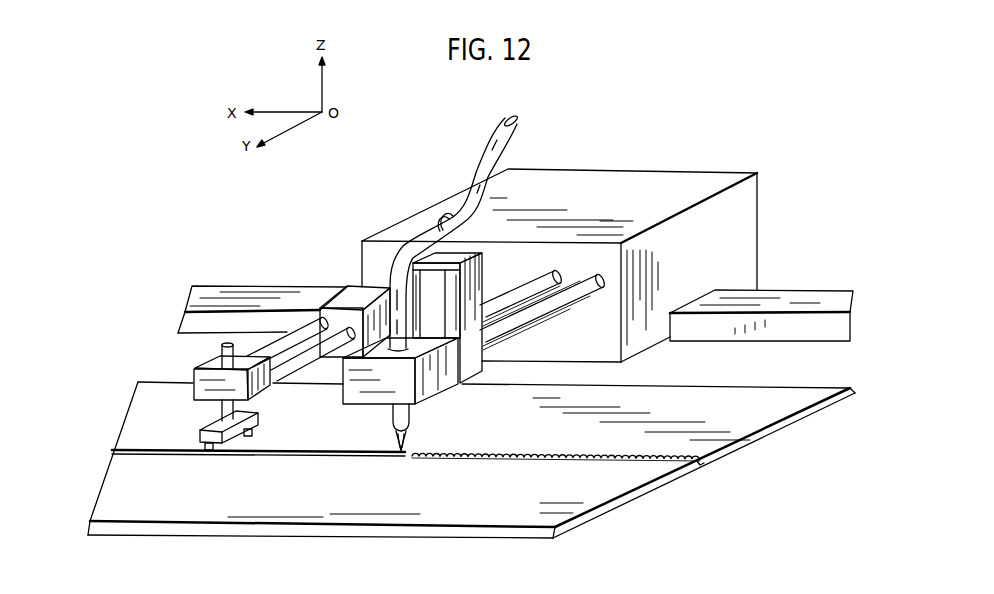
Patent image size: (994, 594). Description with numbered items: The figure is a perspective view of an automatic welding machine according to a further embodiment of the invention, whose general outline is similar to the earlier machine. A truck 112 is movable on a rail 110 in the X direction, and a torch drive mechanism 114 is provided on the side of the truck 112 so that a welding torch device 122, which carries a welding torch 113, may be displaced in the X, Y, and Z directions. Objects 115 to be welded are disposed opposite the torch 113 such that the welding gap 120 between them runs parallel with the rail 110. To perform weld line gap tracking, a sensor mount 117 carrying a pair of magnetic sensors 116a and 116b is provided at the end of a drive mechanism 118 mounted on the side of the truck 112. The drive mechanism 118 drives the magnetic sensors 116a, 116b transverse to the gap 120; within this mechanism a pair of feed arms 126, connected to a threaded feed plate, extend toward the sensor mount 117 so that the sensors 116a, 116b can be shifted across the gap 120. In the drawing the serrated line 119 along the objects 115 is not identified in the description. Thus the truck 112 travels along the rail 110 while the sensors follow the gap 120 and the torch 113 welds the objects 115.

The rail 110 is at (810, 295).
The truck 112 is at (682, 180).
The welding torch 113 is at (387, 432).
The torch drive mechanism 114 is at (536, 327).
The objects to be welded 115 is at (746, 425).
The magnetic sensor 116a is at (207, 448).
The magnetic sensor 116b is at (253, 436).
The sensor mount 117 is at (210, 426).
The drive mechanism 118 is at (347, 300).
The serrated edge 119 is at (580, 453).
The welding gap 120 is at (325, 458).
The welding torch device 122 is at (440, 382).
The feed arms 126 is at (300, 352).